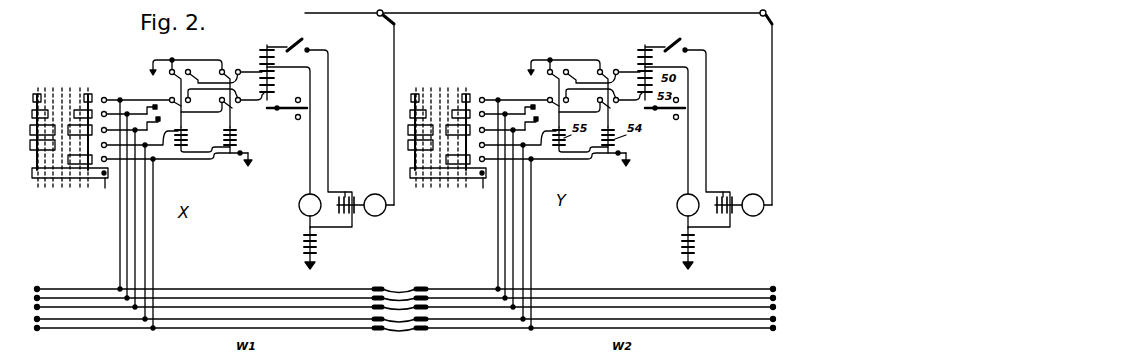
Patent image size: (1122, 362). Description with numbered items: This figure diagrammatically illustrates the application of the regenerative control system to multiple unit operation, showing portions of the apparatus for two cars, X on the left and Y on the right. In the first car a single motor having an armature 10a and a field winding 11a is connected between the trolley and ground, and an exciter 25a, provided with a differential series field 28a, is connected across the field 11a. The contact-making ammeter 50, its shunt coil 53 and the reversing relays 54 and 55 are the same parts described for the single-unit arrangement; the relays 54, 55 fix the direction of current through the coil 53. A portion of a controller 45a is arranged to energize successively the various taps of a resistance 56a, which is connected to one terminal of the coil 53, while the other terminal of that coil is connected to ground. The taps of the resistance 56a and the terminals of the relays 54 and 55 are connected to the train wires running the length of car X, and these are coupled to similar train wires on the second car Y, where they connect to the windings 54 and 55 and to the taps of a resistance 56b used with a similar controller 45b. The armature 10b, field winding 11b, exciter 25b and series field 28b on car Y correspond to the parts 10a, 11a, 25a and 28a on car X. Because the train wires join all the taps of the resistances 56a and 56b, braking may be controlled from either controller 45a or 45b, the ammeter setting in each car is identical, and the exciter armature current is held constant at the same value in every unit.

The controller 45a is at (69, 129).
The controller 45b is at (447, 129).
The resistance 56a is at (149, 106).
The resistance 56b is at (516, 105).
The reversing relay 55 is at (186, 138).
The reversing relay 54 is at (237, 139).
The contact-making ammeter 50 is at (279, 72).
The shunt coil 53 is at (288, 79).
The field winding 11a is at (346, 192).
The field winding 11b is at (728, 191).
The armature 10a is at (375, 194).
The armature 10b is at (757, 194).
The exciter 25a is at (299, 205).
The exciter 25b is at (666, 211).
The differential series field 28a is at (304, 245).
The differential series field 28b is at (670, 248).